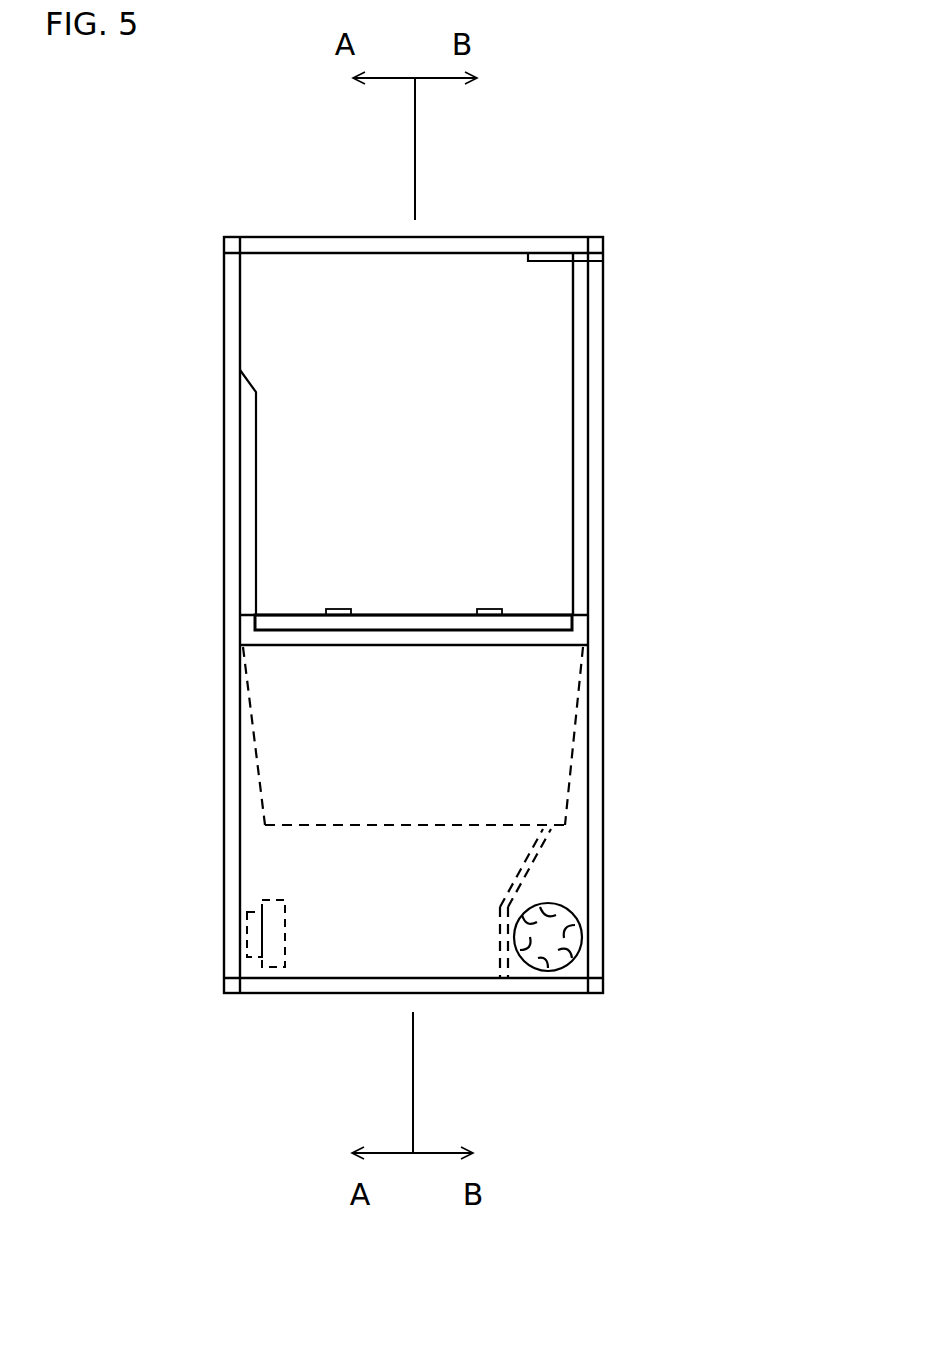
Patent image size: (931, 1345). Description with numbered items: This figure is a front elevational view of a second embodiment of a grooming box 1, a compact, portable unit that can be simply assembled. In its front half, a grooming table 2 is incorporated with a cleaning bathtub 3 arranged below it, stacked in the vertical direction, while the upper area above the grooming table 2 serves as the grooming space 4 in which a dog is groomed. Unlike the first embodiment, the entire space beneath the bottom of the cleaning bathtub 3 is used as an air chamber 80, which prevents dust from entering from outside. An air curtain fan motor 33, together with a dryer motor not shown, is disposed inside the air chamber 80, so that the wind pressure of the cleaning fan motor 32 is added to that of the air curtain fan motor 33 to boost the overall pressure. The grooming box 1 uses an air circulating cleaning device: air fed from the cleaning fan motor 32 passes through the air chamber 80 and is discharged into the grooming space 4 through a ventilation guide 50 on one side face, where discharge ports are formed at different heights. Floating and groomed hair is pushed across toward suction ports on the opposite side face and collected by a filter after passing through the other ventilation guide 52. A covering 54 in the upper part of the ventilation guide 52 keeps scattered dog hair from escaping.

The grooming box 1 is at (500, 233).
The grooming table 2 is at (457, 613).
The cleaning bathtub 3 is at (572, 777).
The grooming space 4 is at (497, 493).
The cleaning fan motor 32 is at (542, 972).
The air curtain fan motor 33 is at (260, 963).
The ventilation guide 50 is at (243, 480).
The ventilation guide 52 is at (580, 334).
The covering 54 is at (573, 255).
The air chamber 80 is at (398, 858).